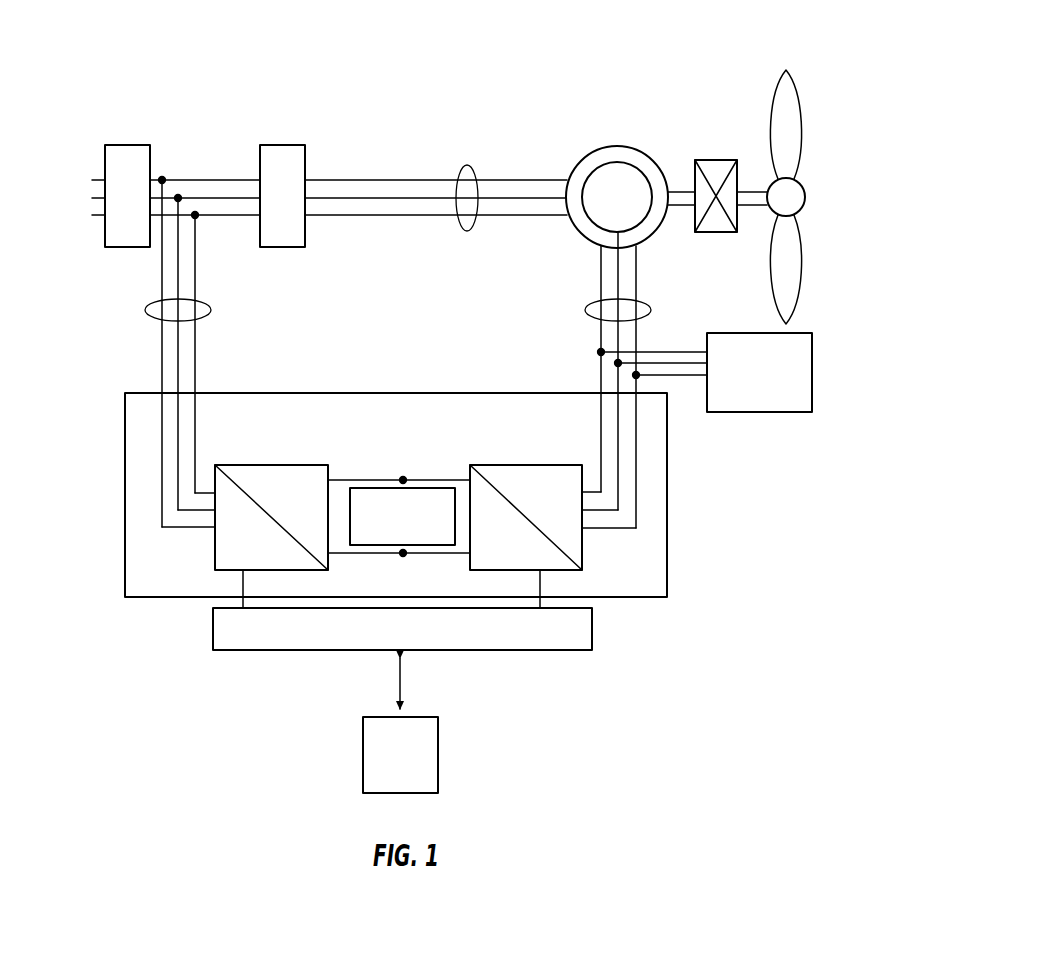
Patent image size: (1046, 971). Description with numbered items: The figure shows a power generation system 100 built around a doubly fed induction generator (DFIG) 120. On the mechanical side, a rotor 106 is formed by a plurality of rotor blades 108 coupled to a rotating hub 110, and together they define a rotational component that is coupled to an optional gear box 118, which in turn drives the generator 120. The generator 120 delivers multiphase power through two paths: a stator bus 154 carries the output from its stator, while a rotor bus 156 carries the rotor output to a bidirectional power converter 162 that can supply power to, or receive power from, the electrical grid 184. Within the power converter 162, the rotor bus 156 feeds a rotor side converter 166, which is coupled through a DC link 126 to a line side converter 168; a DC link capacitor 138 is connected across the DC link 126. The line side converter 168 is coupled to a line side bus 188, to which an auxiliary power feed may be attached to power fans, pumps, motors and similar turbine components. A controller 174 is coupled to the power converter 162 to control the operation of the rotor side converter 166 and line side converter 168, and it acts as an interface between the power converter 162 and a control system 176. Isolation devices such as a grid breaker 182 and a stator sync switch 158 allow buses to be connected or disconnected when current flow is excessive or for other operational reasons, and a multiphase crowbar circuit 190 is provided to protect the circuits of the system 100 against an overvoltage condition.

The power generation system 100 is at (672, 50).
The rotor 106 is at (811, 182).
The rotor blades 108 is at (797, 138).
The rotating hub 110 is at (805, 193).
The gear box 118 is at (722, 143).
The doubly fed induction generator 120 is at (627, 147).
The DC link 126 is at (367, 480).
The DC link capacitor 138 is at (436, 483).
The stator bus 154 is at (470, 166).
The rotor bus 156 is at (584, 312).
The stator sync switch 158 is at (277, 145).
The power converter 162 is at (412, 495).
The rotor side converter 166 is at (503, 465).
The line side converter 168 is at (272, 465).
The controller 174 is at (540, 650).
The control system 176 is at (438, 757).
The grid breaker 182 is at (122, 145).
The electrical grid 184 is at (83, 183).
The line side bus 188 is at (211, 310).
The multiphase crowbar circuit 190 is at (812, 370).